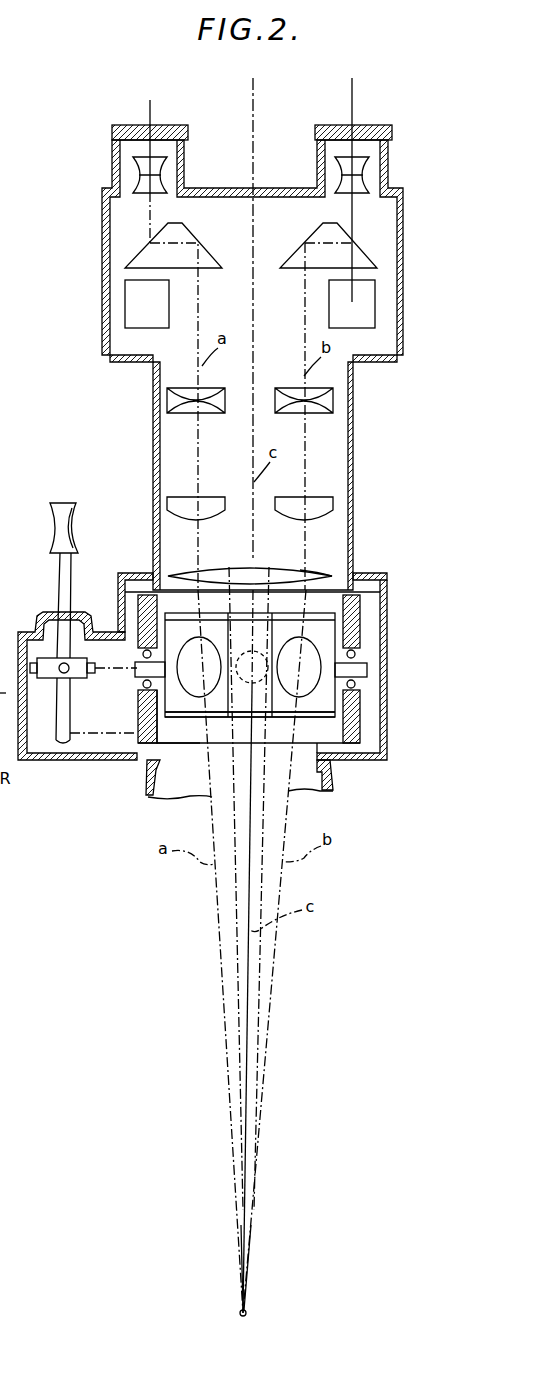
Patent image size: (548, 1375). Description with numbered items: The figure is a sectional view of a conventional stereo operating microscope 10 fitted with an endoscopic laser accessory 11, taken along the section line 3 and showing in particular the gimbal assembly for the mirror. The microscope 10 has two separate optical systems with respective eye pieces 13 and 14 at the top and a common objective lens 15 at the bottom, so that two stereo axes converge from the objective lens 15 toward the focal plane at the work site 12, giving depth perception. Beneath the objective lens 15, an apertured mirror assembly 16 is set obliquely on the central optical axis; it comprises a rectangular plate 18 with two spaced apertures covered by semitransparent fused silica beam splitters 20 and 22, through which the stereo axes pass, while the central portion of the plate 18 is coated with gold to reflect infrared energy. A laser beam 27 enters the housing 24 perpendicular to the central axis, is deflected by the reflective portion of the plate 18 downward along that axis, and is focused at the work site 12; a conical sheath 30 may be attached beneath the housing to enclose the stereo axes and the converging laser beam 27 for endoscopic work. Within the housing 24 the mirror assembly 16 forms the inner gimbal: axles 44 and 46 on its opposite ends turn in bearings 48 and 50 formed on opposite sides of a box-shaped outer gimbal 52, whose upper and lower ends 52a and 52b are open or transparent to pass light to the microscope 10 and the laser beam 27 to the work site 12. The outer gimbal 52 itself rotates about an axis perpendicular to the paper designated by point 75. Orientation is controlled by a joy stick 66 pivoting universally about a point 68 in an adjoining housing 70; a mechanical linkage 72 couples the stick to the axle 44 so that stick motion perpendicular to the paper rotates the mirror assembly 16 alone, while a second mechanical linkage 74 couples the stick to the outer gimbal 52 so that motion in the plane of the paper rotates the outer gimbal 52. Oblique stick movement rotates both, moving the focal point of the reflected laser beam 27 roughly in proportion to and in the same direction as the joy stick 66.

The section line 3 is at (228, 102).
The stereo operating microscope 10 is at (140, 373).
The endoscopic laser accessory 11 is at (358, 768).
The work site 12 is at (248, 1310).
The eye piece 13 is at (113, 160).
The eye piece 14 is at (390, 168).
The objective lens 15 is at (318, 576).
The apertured mirror assembly 16 is at (288, 718).
The rectangular plate 18 is at (265, 624).
The semitransparent beam splitter 20 is at (168, 622).
The semitransparent beam splitter 22 is at (302, 626).
The housing 24 is at (120, 586).
The laser beam 27 is at (244, 654).
The conical sheath 30 is at (150, 778).
The axle 44 is at (138, 666).
The axle 46 is at (367, 668).
The bearing 48 is at (140, 686).
The bearing 50 is at (362, 688).
The outer gimbal 52 is at (160, 728).
The upper end of outer gimbal 52a is at (226, 568).
The lower end of outer gimbal 52b is at (327, 786).
The joy stick 66 is at (75, 518).
The pivot point 68 is at (64, 674).
The housing 70 is at (20, 632).
The mechanical linkage 72 is at (114, 672).
The mechanical linkage 74 is at (87, 737).
The axis of rotation point 75 is at (256, 672).